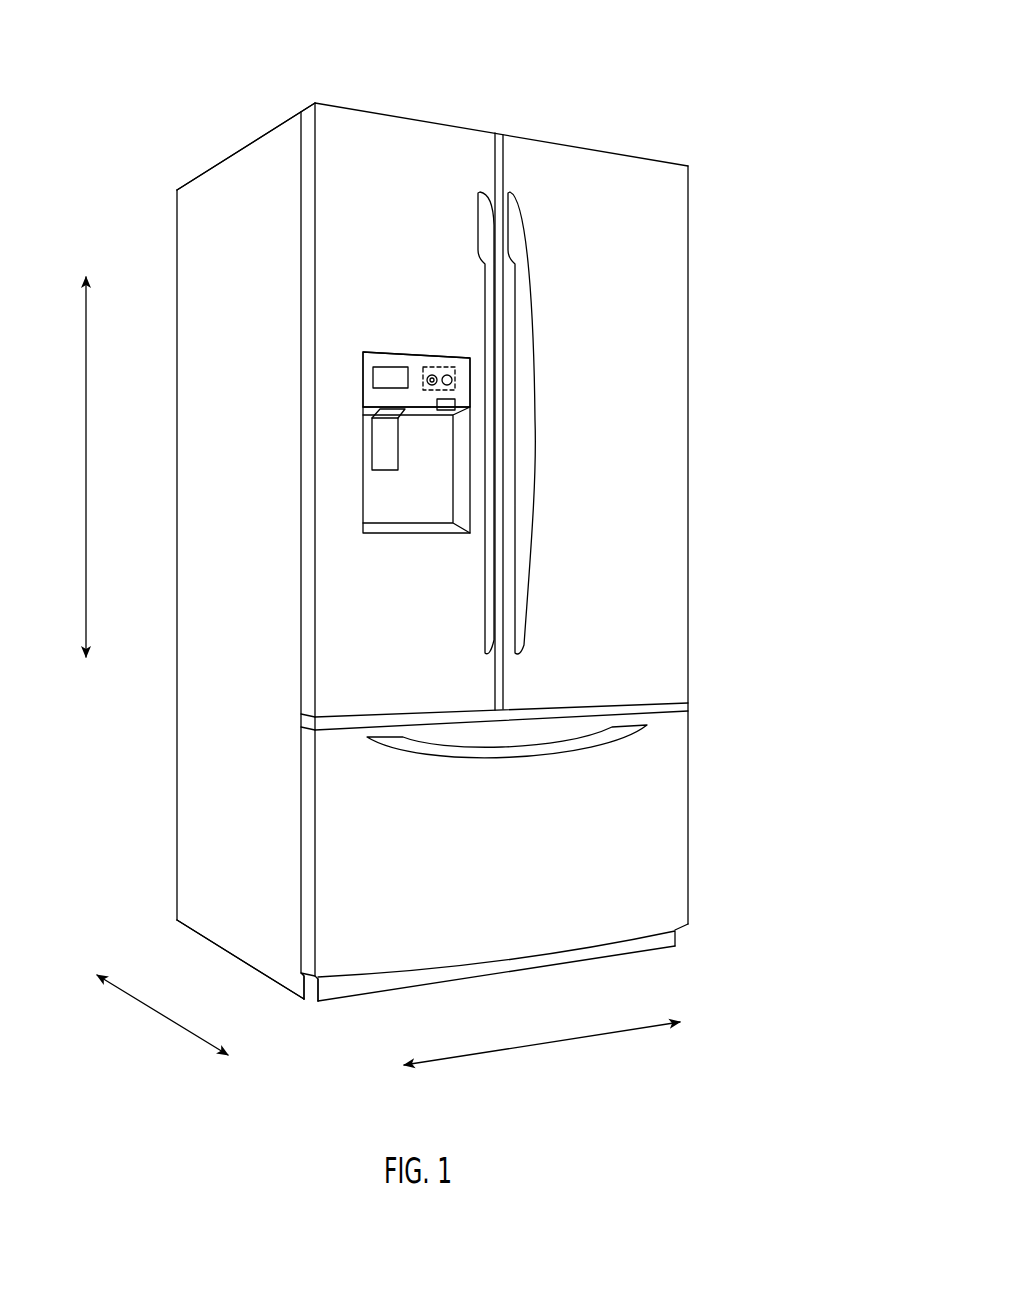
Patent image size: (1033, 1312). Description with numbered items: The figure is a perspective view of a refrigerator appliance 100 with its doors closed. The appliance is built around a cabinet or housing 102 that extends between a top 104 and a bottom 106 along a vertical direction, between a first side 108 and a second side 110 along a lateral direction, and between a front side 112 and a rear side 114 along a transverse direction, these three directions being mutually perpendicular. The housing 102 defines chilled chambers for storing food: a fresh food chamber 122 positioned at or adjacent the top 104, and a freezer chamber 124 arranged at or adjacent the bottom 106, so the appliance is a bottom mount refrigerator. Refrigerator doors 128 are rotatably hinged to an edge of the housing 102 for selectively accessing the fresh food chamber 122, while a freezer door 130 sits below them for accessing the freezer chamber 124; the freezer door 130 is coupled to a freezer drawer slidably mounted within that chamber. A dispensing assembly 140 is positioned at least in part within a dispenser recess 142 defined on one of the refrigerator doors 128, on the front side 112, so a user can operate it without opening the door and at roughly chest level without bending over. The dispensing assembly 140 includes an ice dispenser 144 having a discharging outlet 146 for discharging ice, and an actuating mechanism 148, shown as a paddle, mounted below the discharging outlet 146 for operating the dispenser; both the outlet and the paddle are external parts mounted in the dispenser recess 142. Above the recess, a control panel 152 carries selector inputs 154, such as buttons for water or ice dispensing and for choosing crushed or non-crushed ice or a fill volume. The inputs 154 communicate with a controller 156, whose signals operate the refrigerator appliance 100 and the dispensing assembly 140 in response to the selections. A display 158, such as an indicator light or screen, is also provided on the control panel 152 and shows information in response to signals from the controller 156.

The refrigerator appliance 100 is at (678, 84).
The cabinet or housing 102 is at (255, 182).
The top 104 is at (175, 191).
The bottom 106 is at (171, 918).
The first side 108 is at (320, 1005).
The second side 110 is at (677, 950).
The front side 112 is at (299, 1001).
The rear side 114 is at (175, 924).
The fresh food chamber 122 is at (712, 166).
The freezer chamber 124 is at (712, 708).
The refrigerator doors 128 is at (417, 228).
The freezer door 130 is at (550, 851).
The dispensing assembly 140 is at (369, 318).
The dispenser recess 142 is at (415, 522).
The ice dispenser 144 is at (365, 464).
The discharging outlet 146 is at (379, 413).
The actuating mechanism 148 is at (385, 466).
The control panel 152 is at (360, 372).
The selector inputs 154 is at (434, 376).
The controller 156 is at (455, 380).
The display 158 is at (390, 376).